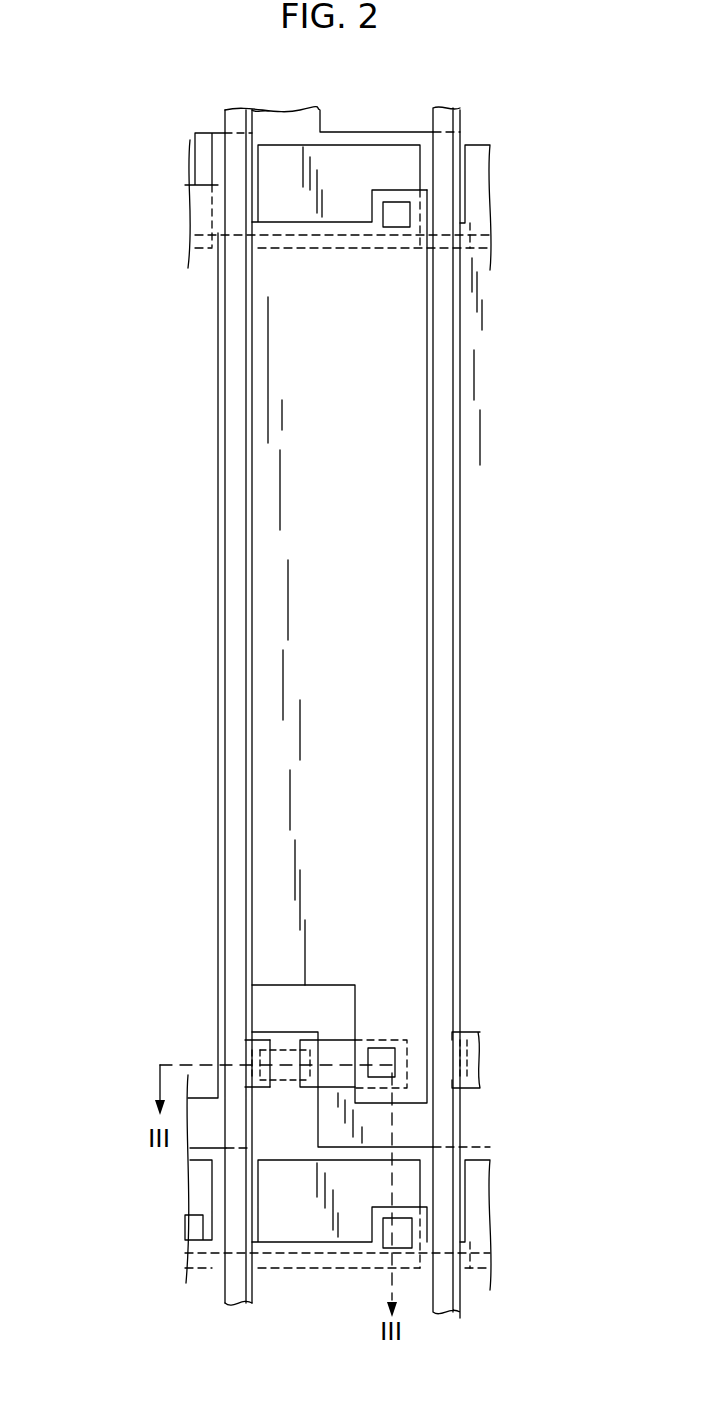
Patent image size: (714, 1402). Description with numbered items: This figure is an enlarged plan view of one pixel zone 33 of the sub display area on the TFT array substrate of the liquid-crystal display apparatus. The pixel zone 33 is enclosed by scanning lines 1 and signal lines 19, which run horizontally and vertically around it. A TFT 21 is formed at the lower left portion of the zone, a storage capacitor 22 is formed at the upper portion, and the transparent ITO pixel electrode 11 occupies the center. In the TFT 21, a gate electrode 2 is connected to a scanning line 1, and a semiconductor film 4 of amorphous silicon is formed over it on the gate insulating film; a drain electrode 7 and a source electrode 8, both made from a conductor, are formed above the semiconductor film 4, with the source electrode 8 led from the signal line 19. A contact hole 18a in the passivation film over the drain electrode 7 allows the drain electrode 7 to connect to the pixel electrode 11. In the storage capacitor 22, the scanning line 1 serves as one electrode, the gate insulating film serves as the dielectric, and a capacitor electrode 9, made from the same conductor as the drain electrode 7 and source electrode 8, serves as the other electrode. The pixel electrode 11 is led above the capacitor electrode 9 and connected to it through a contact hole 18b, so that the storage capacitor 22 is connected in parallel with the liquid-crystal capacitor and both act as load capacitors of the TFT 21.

The scanning line 1 is at (218, 173).
The gate electrode 2 is at (290, 1033).
The semiconductor film 4 is at (280, 1063).
The drain electrode 7 is at (333, 1048).
The source electrode 8 is at (257, 1050).
The capacitor electrode 9 is at (407, 168).
The pixel electrode 11 is at (360, 757).
The contact hole 18a is at (382, 1057).
The contact hole 18b is at (397, 218).
The signal line 19 is at (232, 818).
The TFT 21 is at (157, 1017).
The storage capacitor 22 is at (507, 135).
The pixel zone 33 is at (487, 580).